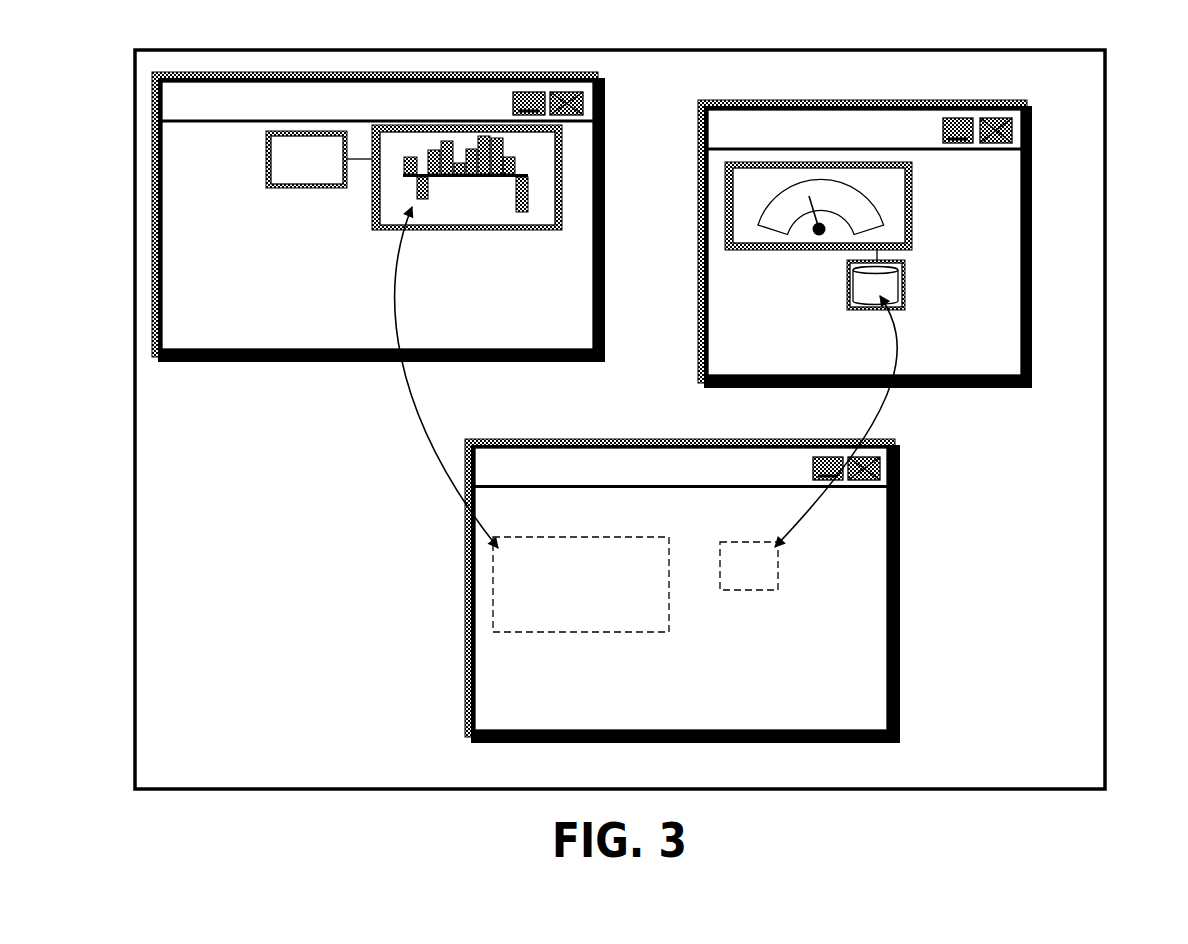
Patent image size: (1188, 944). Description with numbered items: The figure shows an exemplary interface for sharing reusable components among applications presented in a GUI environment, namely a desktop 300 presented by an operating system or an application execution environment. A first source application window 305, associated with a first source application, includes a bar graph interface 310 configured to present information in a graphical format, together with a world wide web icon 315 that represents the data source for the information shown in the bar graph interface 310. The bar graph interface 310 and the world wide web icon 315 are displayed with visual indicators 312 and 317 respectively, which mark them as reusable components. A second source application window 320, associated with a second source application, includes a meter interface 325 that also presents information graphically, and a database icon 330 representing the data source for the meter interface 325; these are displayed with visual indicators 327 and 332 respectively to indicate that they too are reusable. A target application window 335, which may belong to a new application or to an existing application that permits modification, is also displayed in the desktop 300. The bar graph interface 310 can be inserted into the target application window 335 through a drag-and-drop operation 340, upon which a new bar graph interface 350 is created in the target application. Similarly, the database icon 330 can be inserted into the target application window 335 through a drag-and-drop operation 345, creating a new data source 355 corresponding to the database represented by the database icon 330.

The desktop 300 is at (1106, 183).
The first source application window 305 is at (604, 132).
The bar graph interface 310 is at (483, 227).
The visual indicator 312 is at (550, 230).
The world wide web icon 315 is at (313, 182).
The visual indicator 317 is at (337, 187).
The second source application window 320 is at (699, 165).
The meter interface 325 is at (910, 232).
The visual indicator 327 is at (913, 190).
The database icon 330 is at (892, 280).
The visual indicator 332 is at (848, 310).
The target application window 335 is at (465, 602).
The drag-and-drop operation 340 is at (418, 424).
The drag-and-drop operation 345 is at (883, 410).
The new bar graph interface 350 is at (560, 537).
The new data source 355 is at (778, 573).